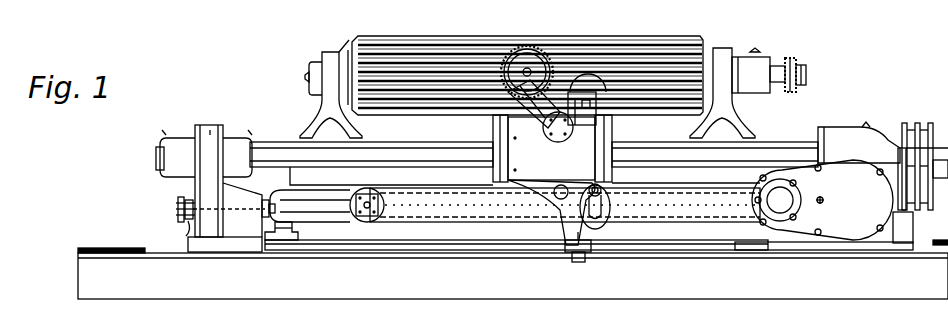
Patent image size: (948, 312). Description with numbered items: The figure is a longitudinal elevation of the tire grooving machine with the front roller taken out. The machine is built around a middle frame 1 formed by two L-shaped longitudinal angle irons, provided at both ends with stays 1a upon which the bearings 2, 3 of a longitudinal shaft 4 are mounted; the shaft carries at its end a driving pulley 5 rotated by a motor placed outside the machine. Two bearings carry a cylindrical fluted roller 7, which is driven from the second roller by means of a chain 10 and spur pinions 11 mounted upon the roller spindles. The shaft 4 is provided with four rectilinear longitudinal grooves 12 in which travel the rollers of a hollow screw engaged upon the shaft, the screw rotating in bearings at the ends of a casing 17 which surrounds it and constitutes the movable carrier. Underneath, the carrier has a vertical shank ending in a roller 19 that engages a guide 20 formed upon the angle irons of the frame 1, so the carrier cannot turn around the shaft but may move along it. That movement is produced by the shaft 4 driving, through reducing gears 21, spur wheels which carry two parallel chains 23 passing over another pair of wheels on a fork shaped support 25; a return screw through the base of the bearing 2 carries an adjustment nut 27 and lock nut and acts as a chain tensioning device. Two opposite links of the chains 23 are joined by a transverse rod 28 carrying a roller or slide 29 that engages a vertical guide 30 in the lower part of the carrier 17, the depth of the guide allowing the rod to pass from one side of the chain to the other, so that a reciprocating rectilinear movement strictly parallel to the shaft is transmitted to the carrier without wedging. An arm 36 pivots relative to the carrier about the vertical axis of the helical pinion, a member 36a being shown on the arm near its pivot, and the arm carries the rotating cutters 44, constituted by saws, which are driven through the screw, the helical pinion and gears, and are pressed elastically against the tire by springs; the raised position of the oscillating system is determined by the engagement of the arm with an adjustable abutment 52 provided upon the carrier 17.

The middle frame 1 is at (513, 276).
The stays 1a is at (93, 248).
The bearing 2 is at (209, 188).
The bearing 3 is at (862, 166).
The longitudinal shaft 4 is at (447, 147).
The driving pulley 5 is at (917, 132).
The cylindrical fluted roller 7 is at (628, 40).
The chain 10 is at (792, 58).
The spur pinion 11 is at (800, 86).
The rectilinear longitudinal groove 12 is at (410, 154).
The casing 17 is at (552, 148).
The roller 19 is at (568, 243).
The guide 20 is at (500, 249).
The reducing gear 21 is at (822, 200).
The chain 23 is at (427, 219).
The fork shaped support 25 is at (333, 213).
The adjustment nut 27 is at (188, 221).
The transverse rod 28 is at (556, 201).
The roller or slide 29 is at (603, 190).
The vertical guide 30 is at (604, 220).
The arm 36 is at (565, 93).
The roller 36a is at (568, 130).
The rotating cutter 44 is at (536, 48).
The adjustable abutment 52 is at (600, 92).